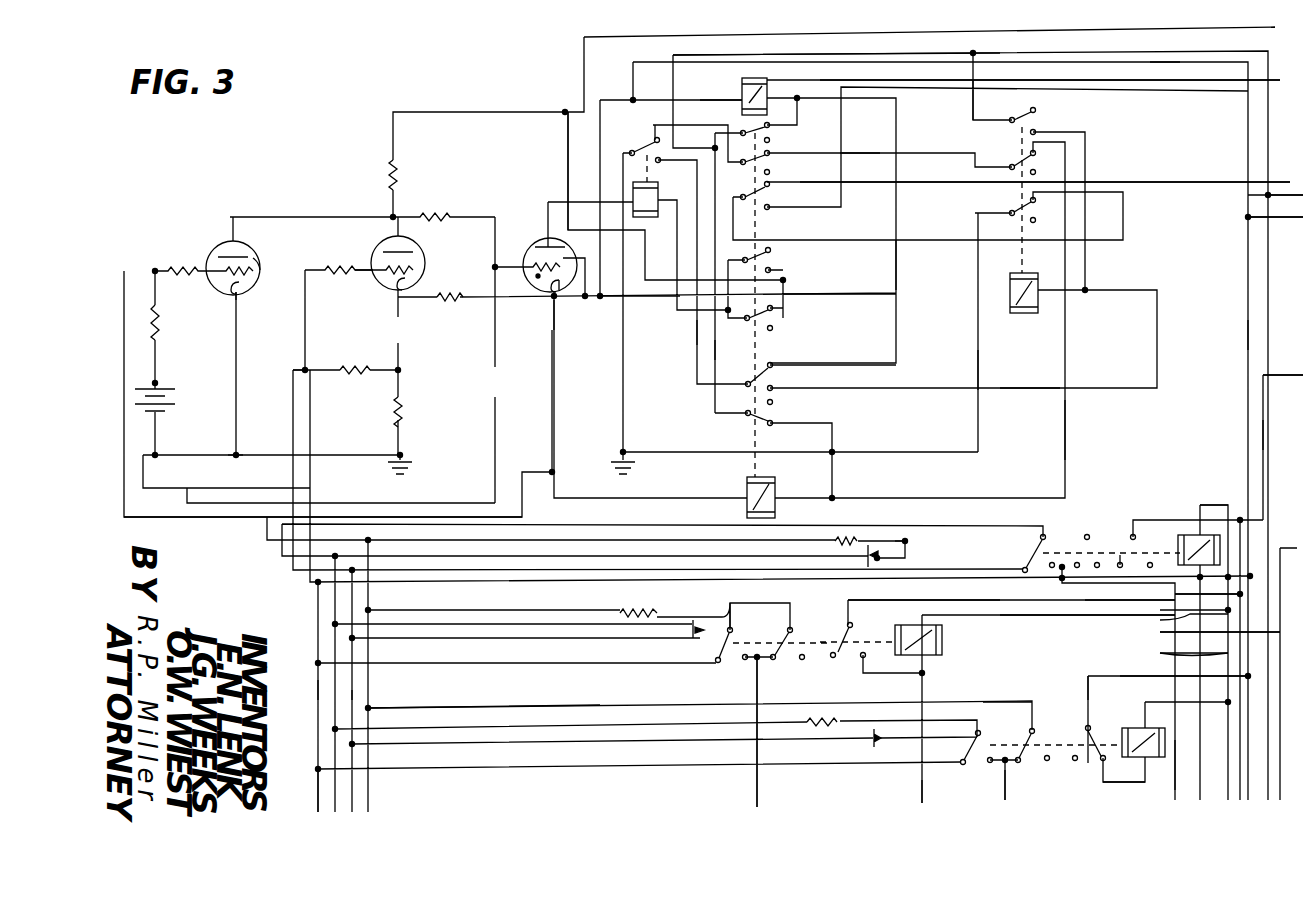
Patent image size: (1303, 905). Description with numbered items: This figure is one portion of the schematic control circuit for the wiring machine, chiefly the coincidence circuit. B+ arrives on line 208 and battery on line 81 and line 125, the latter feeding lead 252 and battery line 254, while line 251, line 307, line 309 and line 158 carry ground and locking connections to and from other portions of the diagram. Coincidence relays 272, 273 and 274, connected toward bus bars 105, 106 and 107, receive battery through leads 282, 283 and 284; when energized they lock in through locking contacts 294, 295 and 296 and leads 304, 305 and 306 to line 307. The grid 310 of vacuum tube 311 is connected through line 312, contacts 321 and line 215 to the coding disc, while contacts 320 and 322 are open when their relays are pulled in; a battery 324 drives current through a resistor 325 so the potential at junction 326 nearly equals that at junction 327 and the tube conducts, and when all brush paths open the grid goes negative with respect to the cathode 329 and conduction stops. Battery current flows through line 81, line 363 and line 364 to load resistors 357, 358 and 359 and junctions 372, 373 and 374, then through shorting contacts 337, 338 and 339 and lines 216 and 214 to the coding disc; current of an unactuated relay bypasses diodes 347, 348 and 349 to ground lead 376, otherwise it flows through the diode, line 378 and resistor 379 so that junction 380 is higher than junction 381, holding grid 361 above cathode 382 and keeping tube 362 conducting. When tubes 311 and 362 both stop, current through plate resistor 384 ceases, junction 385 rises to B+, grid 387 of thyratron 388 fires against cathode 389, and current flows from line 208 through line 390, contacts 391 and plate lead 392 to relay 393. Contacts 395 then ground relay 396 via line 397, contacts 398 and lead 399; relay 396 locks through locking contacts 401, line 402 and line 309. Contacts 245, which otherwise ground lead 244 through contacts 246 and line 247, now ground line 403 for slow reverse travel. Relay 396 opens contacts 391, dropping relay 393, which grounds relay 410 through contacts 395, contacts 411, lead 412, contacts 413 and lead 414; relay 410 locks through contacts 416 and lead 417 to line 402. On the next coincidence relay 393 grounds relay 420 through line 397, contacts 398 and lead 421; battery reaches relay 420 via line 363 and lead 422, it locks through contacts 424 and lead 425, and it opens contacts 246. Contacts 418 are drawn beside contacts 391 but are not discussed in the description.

The line 81 is at (1250, 220).
The bus bar 105 is at (1175, 773).
The bus bar 106 is at (922, 793).
The bus bar 107 is at (1145, 787).
The line 125 is at (1248, 331).
The line 158 is at (1263, 430).
The B+ line 208 is at (584, 77).
The line 214 is at (1085, 600).
The line 215 is at (757, 793).
The line 216 is at (1005, 782).
The lead 244 is at (908, 80).
The contacts 245 is at (766, 196).
The contacts 246 is at (1012, 211).
The line 247 is at (978, 370).
The line 251 is at (1280, 788).
The lead 252 is at (1173, 621).
The battery line 254 is at (1240, 710).
The coincidence relay 272 is at (1136, 714).
The coincidence relay 273 is at (942, 642).
The coincidence relay 274 is at (1190, 538).
The lead 282 is at (1163, 676).
The lead 283 is at (1013, 616).
The lead 284 is at (1212, 505).
The locking contacts 294 is at (1083, 728).
The locking contacts 295 is at (848, 625).
The locking contacts 296 is at (1123, 550).
The locking lead 304 is at (1082, 685).
The locking lead 305 is at (930, 598).
The locking lead 306 is at (1136, 527).
The line 307 is at (1263, 374).
The line 309 is at (1265, 195).
The grid 310 is at (215, 264).
The vacuum tube 311 is at (258, 263).
The line 312 is at (168, 518).
The contacts 320 is at (1017, 736).
The contacts 321 is at (790, 627).
The contacts 322 is at (1087, 515).
The battery 324 is at (210, 378).
The resistor 325 is at (162, 327).
The junction 326 is at (154, 270).
The junction 327 is at (234, 455).
The cathode 329 is at (239, 290).
The shorting contacts 337 is at (963, 763).
The shorting contacts 338 is at (728, 660).
The shorting contacts 339 is at (1024, 556).
The diode 347 is at (880, 747).
The diode 348 is at (693, 645).
The diode 349 is at (876, 544).
The load resistor 357 is at (827, 715).
The load resistor 358 is at (648, 617).
The load resistor 359 is at (843, 538).
The grid 361 is at (370, 271).
The tube 362 is at (422, 254).
The line 363 is at (553, 392).
The line 364 is at (467, 490).
The junction 372 is at (970, 703).
The junction 373 is at (731, 613).
The junction 374 is at (909, 537).
The ground lead 376 is at (329, 687).
The line 378 is at (285, 411).
The resistor 379 is at (355, 374).
The junction 380 is at (305, 372).
The junction 381 is at (400, 371).
The cathode 382 is at (422, 282).
The plate resistor 384 is at (398, 174).
The junction 385 is at (396, 214).
The grid 387 is at (554, 312).
The thyratron 388 is at (547, 241).
The cathode 389 is at (562, 290).
The line 390 is at (568, 144).
The contacts 391 is at (770, 253).
The plate lead 392 is at (640, 309).
The relay 393 is at (648, 196).
The contacts 395 is at (654, 139).
The relay 396 is at (767, 80).
The line 397 is at (697, 331).
The contacts 398 is at (745, 380).
The lead 399 is at (896, 266).
The locking contacts 401 is at (770, 135).
The line 402 is at (700, 60).
The line 403 is at (868, 182).
The relay 410 is at (747, 492).
The contacts 411 is at (770, 164).
The lead 412 is at (862, 147).
The contacts 413 is at (1012, 163).
The lead 414 is at (1068, 429).
The contacts 416 is at (750, 416).
The lead 417 is at (715, 349).
The relay contact 418 is at (783, 310).
The relay 420 is at (1024, 313).
The lead 421 is at (1030, 388).
The lead 422 is at (870, 297).
The contacts 424 is at (1035, 112).
The lead 425 is at (973, 99).